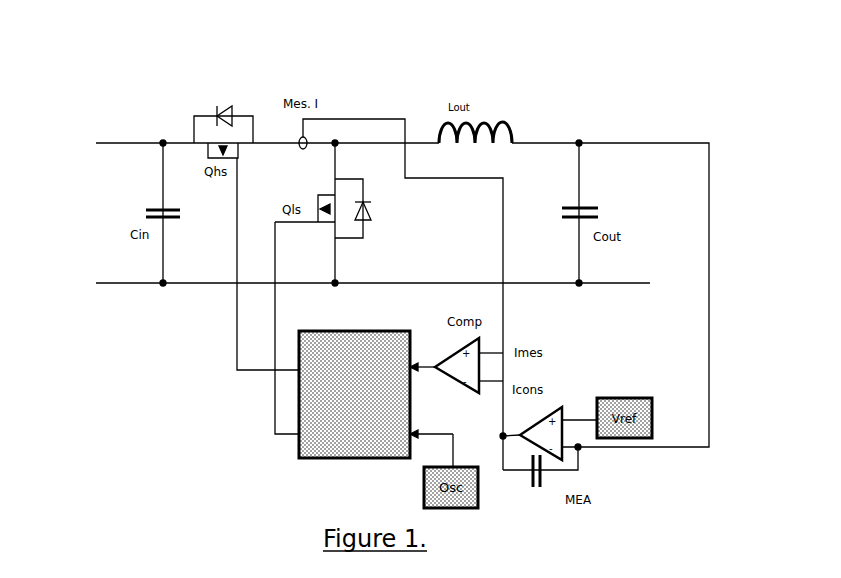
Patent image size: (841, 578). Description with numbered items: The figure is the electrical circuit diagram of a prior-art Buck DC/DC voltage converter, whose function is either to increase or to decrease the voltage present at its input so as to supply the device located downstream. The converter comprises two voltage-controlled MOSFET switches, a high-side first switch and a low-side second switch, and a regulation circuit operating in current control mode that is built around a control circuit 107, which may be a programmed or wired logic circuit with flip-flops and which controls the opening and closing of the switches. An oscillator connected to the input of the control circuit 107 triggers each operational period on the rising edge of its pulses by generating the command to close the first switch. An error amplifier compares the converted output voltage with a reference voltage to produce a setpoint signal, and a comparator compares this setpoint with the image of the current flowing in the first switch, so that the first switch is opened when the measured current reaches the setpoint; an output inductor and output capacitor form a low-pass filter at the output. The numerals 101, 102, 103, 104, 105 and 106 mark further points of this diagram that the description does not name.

The input 101 is at (83, 205).
The input node 102 is at (160, 138).
The input ground node 103 is at (160, 290).
The output node 104 is at (582, 138).
The output ground node 105 is at (575, 290).
The output 106 is at (645, 213).
The control circuit 107 is at (300, 466).